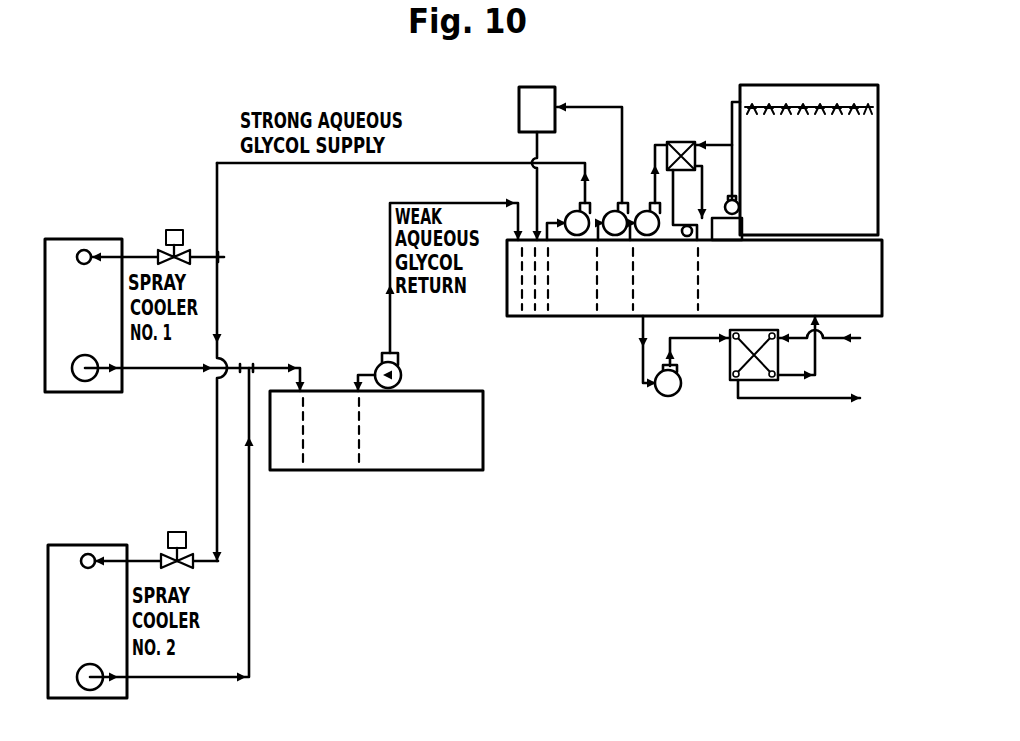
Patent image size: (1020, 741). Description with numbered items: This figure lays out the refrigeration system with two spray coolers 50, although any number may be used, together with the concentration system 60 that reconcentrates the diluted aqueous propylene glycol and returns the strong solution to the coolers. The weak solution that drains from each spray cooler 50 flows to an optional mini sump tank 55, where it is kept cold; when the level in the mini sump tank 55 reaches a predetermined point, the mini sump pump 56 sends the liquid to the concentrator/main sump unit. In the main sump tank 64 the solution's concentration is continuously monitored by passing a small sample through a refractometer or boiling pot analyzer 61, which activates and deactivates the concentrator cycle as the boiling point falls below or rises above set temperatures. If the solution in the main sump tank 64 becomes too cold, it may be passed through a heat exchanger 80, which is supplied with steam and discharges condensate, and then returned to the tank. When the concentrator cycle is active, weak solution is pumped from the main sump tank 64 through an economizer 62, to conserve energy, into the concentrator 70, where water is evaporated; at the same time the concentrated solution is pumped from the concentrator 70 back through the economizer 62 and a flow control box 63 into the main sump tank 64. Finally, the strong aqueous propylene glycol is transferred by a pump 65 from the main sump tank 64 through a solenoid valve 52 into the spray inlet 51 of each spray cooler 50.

The spray cooler 50 is at (49, 680).
The spray inlet 51 is at (86, 250).
The solenoid valve 52 is at (173, 230).
The mini sump tank 55 is at (425, 445).
The mini sump pump 56 is at (400, 368).
The concentration system 60 is at (588, 322).
The refractometer or boiling pot analyzer 61 is at (547, 124).
The economizer 62 is at (680, 142).
The flow control box 63 is at (693, 223).
The main sump tank 64 is at (588, 290).
The pump 65 is at (572, 212).
The concentrator 70 is at (827, 196).
The heat exchanger 80 is at (735, 382).